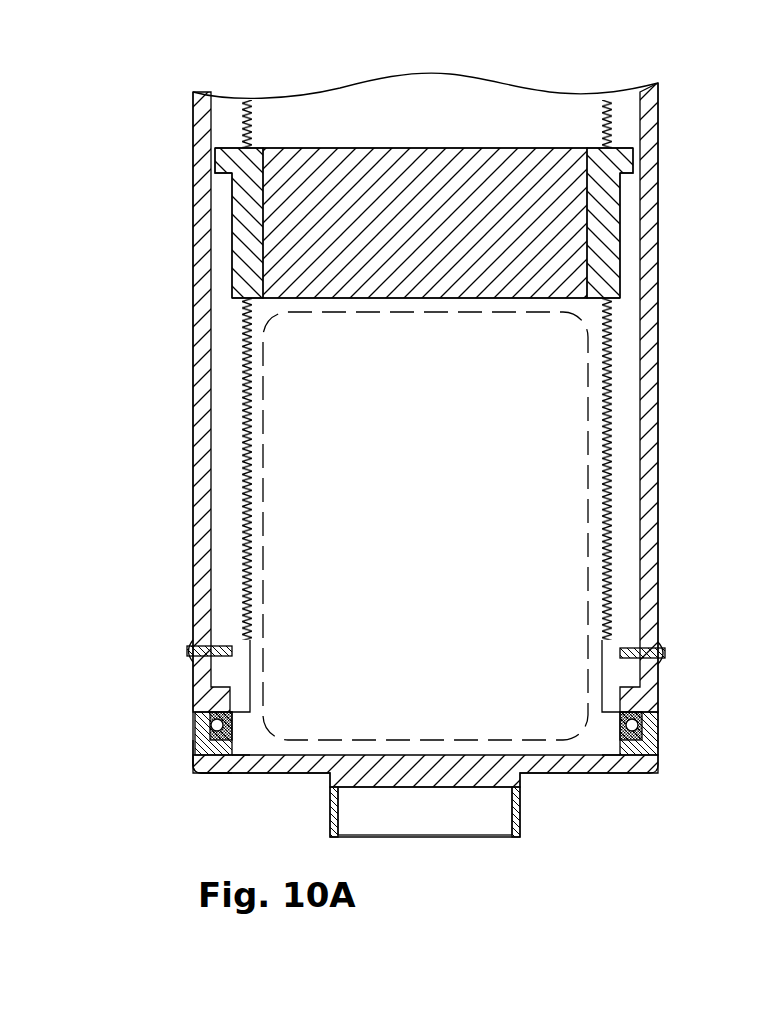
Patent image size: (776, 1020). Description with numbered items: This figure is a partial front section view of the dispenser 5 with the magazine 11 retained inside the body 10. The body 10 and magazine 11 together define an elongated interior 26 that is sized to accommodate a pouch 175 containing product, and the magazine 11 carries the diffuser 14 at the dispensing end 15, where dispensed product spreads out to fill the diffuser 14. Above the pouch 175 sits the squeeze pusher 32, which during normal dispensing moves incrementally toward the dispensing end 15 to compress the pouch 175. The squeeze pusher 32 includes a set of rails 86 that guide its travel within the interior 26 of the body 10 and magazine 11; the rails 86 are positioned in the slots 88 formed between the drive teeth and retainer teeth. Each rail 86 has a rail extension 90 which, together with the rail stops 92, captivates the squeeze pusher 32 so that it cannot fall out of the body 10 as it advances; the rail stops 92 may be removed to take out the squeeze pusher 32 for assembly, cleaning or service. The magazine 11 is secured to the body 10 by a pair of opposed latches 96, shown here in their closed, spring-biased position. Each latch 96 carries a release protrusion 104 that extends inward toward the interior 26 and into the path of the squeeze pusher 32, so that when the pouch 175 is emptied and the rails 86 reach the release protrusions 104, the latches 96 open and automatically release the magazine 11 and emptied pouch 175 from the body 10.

The dispenser 5 is at (186, 60).
The body 10 is at (658, 130).
The magazine 11 is at (225, 775).
The diffuser 14 is at (362, 825).
The dispensing end 15 is at (509, 860).
The interior 26 is at (573, 745).
The squeeze pusher 32 is at (378, 150).
The rails 86 is at (245, 242).
The slots 88 is at (237, 410).
The rail extension 90 is at (226, 178).
The rail stops 92 is at (222, 646).
The latches 96 is at (197, 742).
The release protrusion 104 is at (262, 760).
The pouch 175 is at (425, 526).